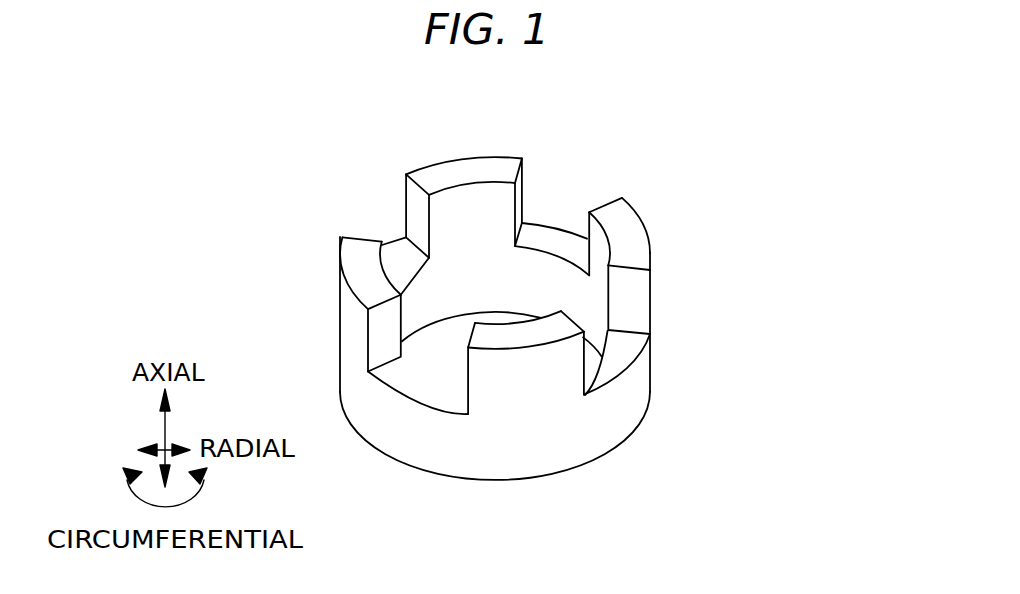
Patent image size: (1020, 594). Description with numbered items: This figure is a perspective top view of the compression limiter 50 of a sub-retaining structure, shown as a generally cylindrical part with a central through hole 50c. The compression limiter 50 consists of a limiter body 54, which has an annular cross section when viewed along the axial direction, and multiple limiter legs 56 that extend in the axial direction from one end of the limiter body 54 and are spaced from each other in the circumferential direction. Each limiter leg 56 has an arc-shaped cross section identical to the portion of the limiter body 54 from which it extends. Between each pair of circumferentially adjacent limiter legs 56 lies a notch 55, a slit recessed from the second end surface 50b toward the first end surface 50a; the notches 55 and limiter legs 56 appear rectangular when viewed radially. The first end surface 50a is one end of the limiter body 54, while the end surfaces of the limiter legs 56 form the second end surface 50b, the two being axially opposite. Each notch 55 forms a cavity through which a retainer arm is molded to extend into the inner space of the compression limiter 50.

The compression limiter 50 is at (712, 105).
The first end surface 50a is at (487, 462).
The second end surface 50b is at (375, 282).
The through hole 50c is at (450, 290).
The limiter body 54 is at (622, 427).
The notches 55 is at (393, 230).
The limiter legs 56 is at (340, 326).